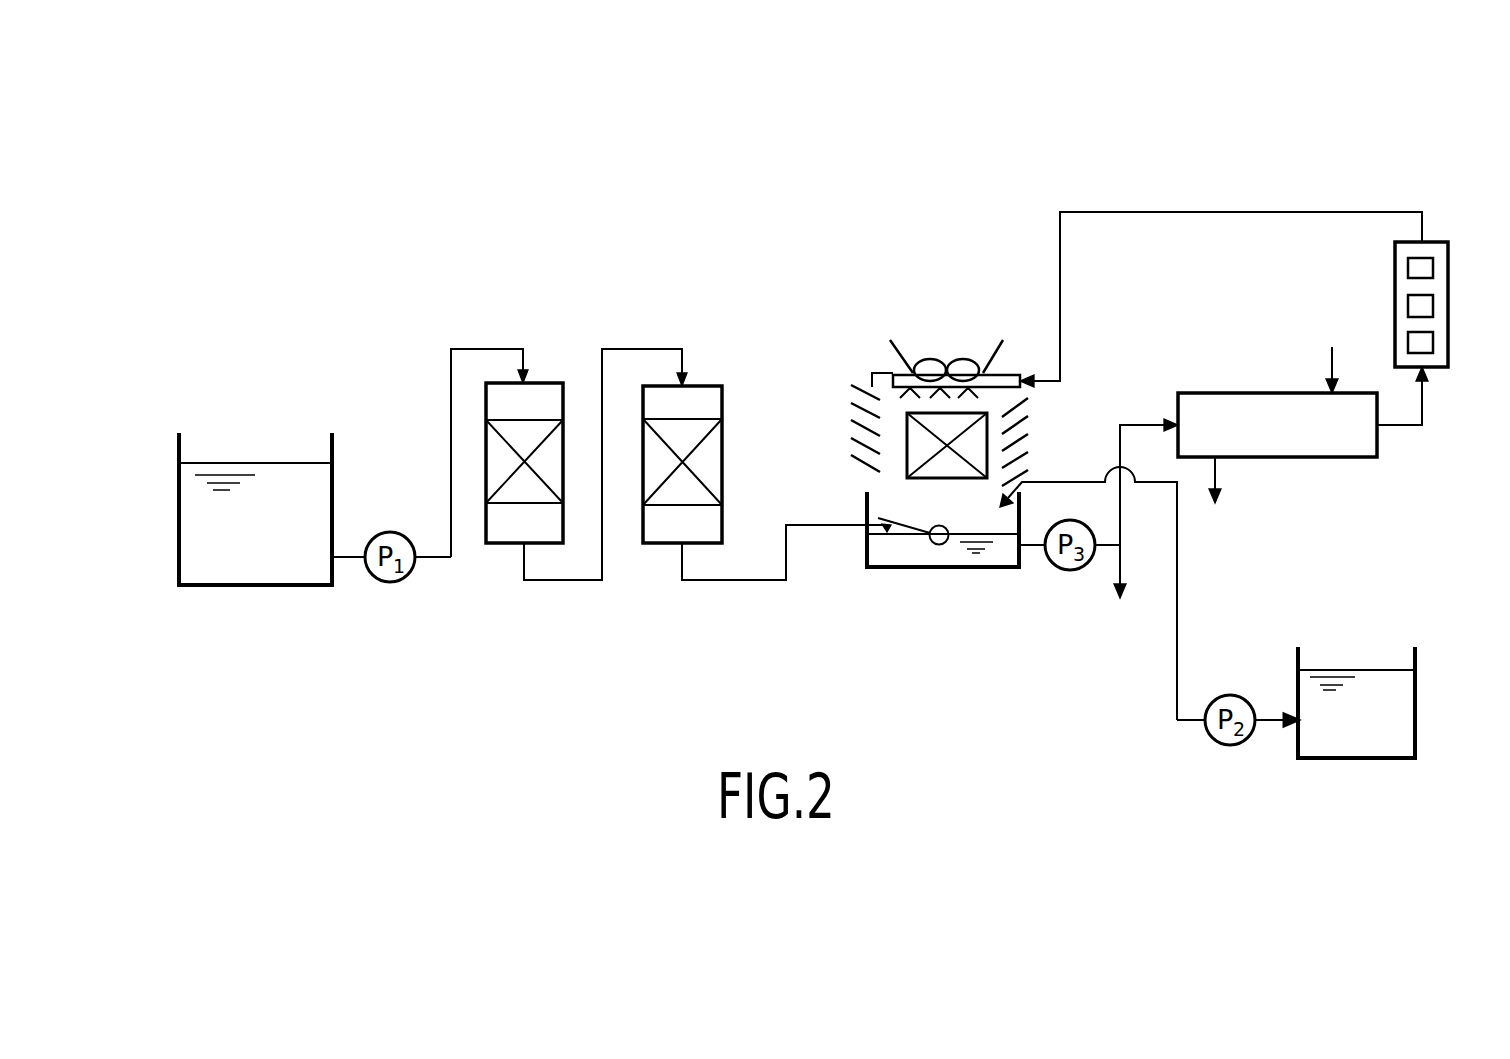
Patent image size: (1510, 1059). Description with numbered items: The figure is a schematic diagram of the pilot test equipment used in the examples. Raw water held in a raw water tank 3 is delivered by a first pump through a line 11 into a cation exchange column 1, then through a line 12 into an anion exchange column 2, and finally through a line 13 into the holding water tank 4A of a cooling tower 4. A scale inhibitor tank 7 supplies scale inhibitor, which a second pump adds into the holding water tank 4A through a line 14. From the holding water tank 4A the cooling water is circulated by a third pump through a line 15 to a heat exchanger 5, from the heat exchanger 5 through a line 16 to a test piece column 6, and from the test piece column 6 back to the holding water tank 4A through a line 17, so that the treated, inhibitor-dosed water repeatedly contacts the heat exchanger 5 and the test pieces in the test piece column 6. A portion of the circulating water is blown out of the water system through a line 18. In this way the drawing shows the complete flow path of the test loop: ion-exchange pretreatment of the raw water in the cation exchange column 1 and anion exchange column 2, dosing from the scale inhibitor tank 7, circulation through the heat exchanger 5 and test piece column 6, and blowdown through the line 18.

The cation exchange column 1 is at (495, 544).
The anion exchange column 2 is at (660, 545).
The raw water tank 3 is at (179, 550).
The cooling tower 4 is at (912, 567).
The holding water tank 4A is at (876, 553).
The heat exchanger 5 is at (1290, 457).
The test piece column 6 is at (1435, 242).
The scale inhibitor tank 7 is at (1298, 745).
The line 11 is at (451, 452).
The line 12 is at (622, 349).
The line 13 is at (736, 580).
The line 14 is at (1177, 632).
The line 15 is at (1118, 455).
The line 16 is at (1422, 412).
The line 17 is at (1152, 212).
The line 18 is at (1120, 548).